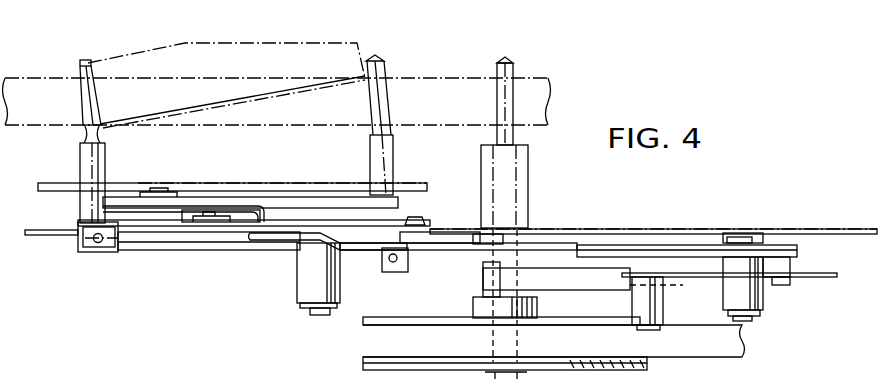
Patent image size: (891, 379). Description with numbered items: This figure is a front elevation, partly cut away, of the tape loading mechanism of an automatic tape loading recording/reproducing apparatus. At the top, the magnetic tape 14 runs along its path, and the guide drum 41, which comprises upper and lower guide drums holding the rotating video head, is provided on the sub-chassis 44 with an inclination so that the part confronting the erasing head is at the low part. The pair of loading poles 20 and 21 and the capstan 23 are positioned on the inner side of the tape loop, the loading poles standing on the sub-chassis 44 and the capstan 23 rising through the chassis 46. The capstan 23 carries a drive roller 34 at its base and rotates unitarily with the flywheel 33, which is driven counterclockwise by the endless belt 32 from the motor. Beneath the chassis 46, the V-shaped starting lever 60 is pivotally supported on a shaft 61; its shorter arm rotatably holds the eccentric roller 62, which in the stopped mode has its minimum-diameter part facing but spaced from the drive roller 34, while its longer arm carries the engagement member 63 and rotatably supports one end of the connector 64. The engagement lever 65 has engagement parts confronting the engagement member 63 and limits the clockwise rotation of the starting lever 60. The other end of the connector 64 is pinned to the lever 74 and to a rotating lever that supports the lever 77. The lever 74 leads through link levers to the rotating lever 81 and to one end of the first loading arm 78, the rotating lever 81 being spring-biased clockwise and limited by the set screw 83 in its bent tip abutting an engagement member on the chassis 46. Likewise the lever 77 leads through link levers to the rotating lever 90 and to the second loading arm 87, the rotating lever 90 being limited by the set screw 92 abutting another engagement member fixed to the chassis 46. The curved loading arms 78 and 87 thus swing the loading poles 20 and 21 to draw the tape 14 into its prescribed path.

The magnetic tape 14 is at (570, 112).
The loading pole 20 is at (80, 116).
The loading pole 21 is at (387, 64).
The capstan 23 is at (512, 65).
The endless belt 32 is at (744, 343).
The flywheel 33 is at (368, 363).
The drive roller 34 is at (482, 262).
The guide drum 41 is at (150, 41).
The sub-chassis 44 is at (68, 186).
The chassis 46 is at (45, 237).
The starting lever 60 is at (777, 245).
The shaft 61 is at (738, 235).
The eccentric roller 62 is at (550, 279).
The engagement member 63 is at (785, 283).
The connector 64 is at (678, 252).
The engagement lever 65 is at (729, 301).
The lever 74 is at (423, 250).
The lever 77 is at (268, 222).
The first loading arm 78 is at (143, 244).
The rotating lever 81 is at (289, 242).
The set screw 83 is at (394, 263).
The second loading arm 87 is at (320, 197).
The rotating lever 90 is at (190, 222).
The set screw 92 is at (98, 245).